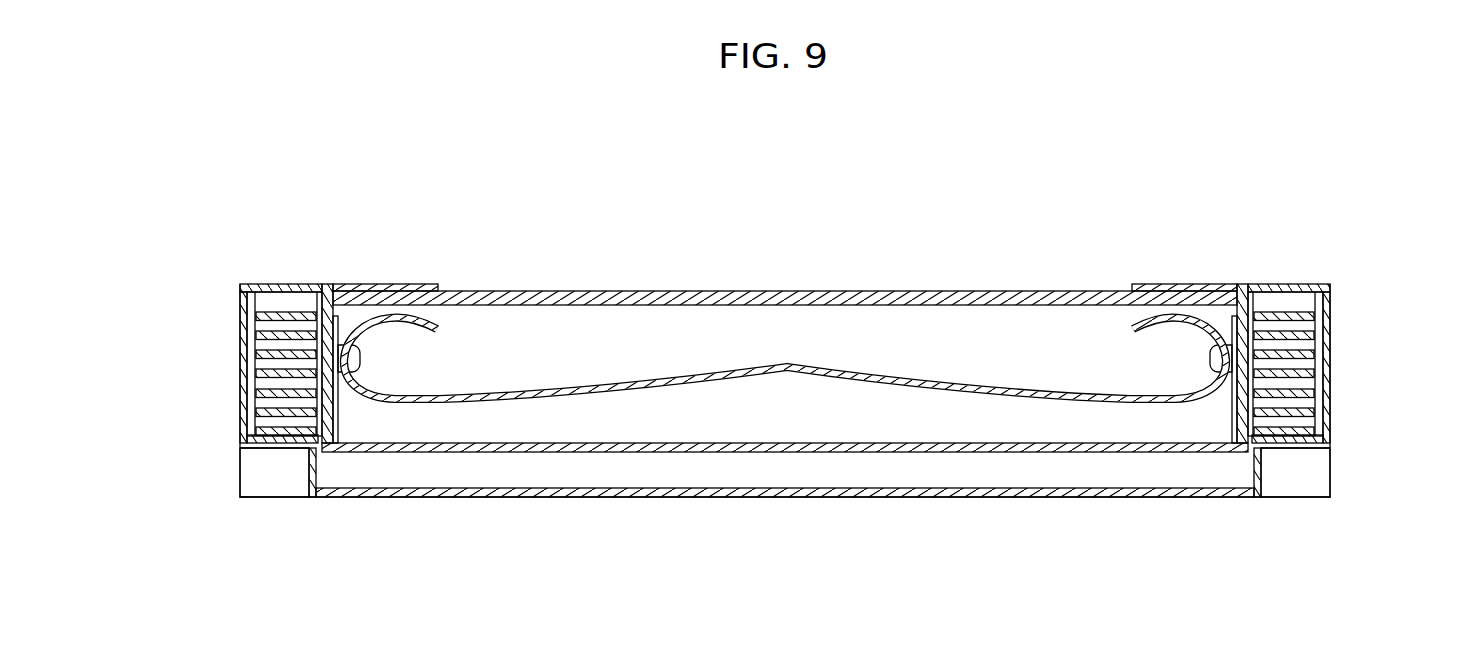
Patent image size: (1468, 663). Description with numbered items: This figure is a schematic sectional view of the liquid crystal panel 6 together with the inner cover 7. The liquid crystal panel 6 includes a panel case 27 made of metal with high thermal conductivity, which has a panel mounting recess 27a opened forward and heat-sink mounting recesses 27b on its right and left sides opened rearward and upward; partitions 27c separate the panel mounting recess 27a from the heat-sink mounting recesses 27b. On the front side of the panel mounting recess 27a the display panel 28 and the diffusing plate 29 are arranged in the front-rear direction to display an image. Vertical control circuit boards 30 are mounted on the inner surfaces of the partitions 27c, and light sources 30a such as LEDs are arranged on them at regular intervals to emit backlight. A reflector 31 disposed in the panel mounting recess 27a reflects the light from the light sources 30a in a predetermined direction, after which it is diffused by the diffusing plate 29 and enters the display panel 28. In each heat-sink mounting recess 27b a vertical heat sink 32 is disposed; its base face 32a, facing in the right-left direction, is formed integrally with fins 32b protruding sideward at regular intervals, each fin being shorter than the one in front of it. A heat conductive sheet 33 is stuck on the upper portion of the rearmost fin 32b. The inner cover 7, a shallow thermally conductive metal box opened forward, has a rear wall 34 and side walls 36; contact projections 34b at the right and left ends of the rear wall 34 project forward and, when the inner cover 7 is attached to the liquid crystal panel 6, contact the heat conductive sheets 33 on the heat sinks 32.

The liquid crystal panel 6 is at (303, 284).
The inner cover 7 is at (965, 498).
The panel case 27 is at (538, 452).
The panel mounting recess 27a is at (848, 442).
The heat-sink mounting recesses 27b is at (262, 288).
The partitions 27c is at (326, 415).
The display panel 28 is at (1067, 291).
The diffusing plate 29 is at (973, 291).
The control circuit boards 30 is at (328, 289).
The light sources 30a is at (362, 358).
The reflector 31 is at (847, 366).
The heat sinks 32 is at (257, 448).
The base face 32a is at (322, 397).
The fins 32b is at (252, 316).
The heat conductive sheet 33 is at (277, 448).
The rear wall 34 is at (762, 497).
The contact projections 34b is at (241, 478).
The side walls 36 is at (240, 298).